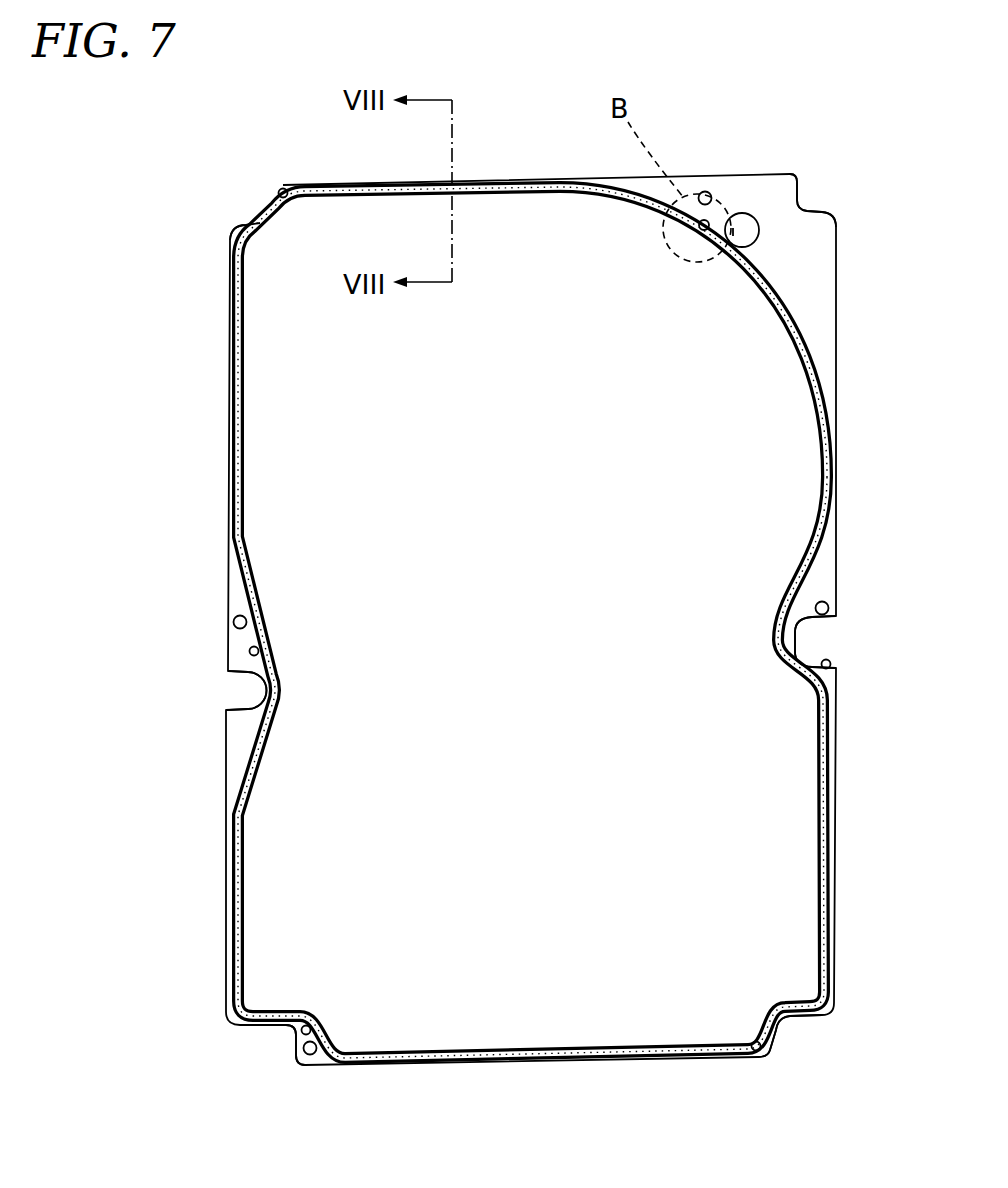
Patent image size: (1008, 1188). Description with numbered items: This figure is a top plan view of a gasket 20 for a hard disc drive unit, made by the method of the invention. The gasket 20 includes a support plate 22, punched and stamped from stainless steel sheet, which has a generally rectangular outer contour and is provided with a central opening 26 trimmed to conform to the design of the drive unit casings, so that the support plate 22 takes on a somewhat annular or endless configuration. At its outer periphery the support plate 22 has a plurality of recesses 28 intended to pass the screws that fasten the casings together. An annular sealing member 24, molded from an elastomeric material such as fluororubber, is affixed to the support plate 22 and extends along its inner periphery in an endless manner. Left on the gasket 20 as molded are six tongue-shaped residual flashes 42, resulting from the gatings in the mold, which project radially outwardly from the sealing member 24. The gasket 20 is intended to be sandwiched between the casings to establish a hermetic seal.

The gasket 20 is at (836, 100).
The support plate 22 is at (826, 343).
The annular sealing member 24 is at (820, 478).
The central opening 26 is at (808, 824).
The recesses 28 is at (258, 222).
The residual flashes 42 is at (281, 190).